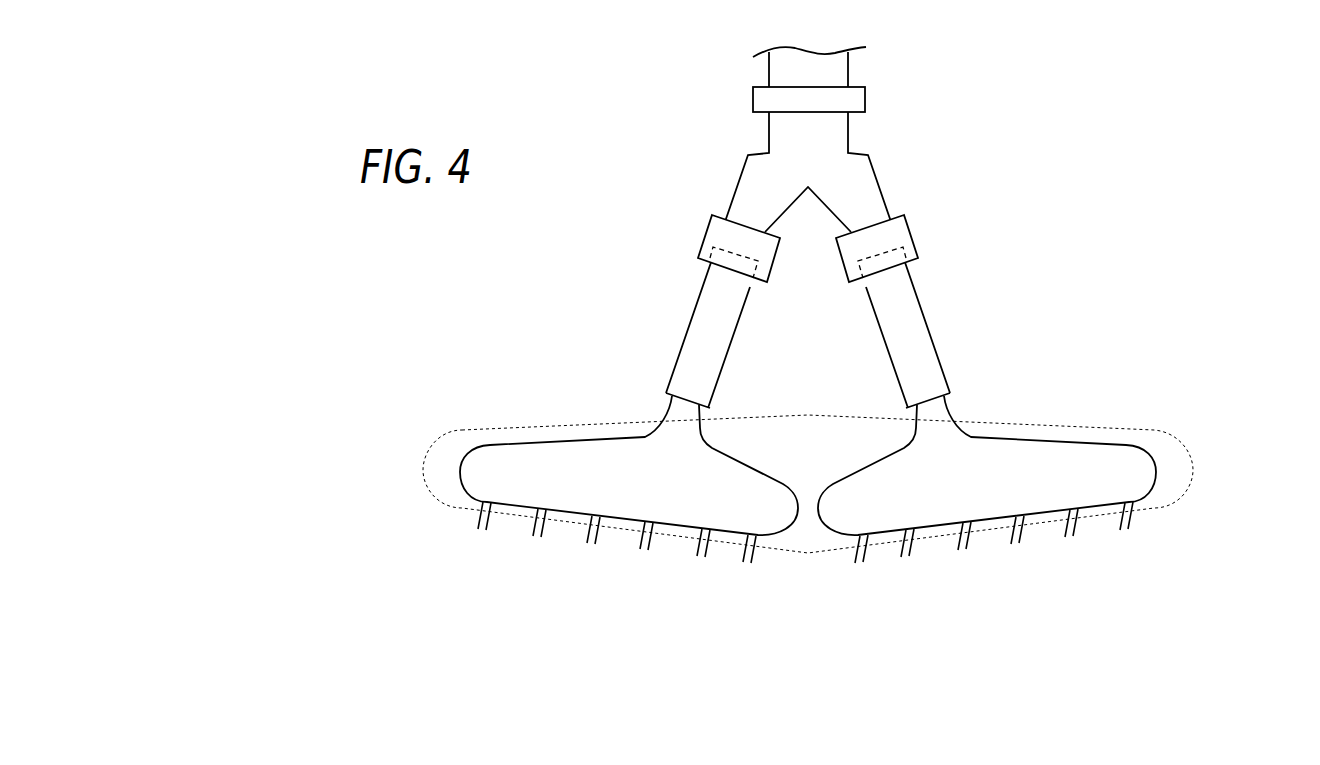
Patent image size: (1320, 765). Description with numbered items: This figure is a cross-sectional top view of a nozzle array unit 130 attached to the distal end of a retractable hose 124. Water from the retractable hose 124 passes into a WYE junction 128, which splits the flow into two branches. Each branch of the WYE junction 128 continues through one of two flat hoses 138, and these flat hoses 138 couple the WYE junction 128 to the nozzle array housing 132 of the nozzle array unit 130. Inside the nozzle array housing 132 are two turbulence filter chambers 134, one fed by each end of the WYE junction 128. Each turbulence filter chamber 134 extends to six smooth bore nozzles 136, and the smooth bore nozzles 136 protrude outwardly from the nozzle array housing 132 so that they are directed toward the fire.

The retractable hose 124 is at (837, 78).
The WYE junction 128 is at (857, 183).
The nozzle array unit 130 is at (785, 451).
The nozzle array housing 132 is at (1168, 430).
The turbulence filter chamber 134 is at (978, 463).
The smooth bore nozzles 136 is at (1133, 512).
The flat hoses 138 is at (707, 323).